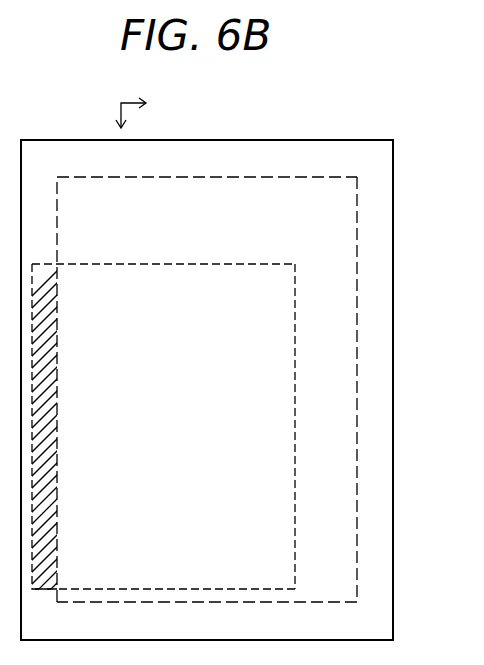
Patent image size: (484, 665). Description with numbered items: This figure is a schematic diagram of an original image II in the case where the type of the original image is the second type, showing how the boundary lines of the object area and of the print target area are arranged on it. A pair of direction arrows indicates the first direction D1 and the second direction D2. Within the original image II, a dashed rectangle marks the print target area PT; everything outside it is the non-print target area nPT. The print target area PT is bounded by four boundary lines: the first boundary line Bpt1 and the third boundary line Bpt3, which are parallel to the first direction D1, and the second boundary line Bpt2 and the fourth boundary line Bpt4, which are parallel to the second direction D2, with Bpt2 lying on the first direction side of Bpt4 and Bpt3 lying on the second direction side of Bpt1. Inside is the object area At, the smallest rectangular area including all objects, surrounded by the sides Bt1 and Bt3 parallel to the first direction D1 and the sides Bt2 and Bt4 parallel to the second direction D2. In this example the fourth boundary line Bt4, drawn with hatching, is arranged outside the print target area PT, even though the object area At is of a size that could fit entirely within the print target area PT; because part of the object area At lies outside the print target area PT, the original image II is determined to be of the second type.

The original image II is at (346, 140).
The non-print target area nPT is at (222, 155).
The print target area PT is at (209, 392).
The first boundary line Bpt1 is at (220, 178).
The second boundary line Bpt2 is at (357, 403).
The third boundary line Bpt3 is at (218, 604).
The fourth boundary line Bpt4 is at (43, 229).
The object area At is at (157, 437).
The first boundary line Bt1 is at (172, 266).
The second boundary line Bt2 is at (294, 400).
The third boundary line Bt3 is at (170, 590).
The fourth boundary line Bt4 is at (43, 592).
The first direction D1 is at (150, 107).
The second direction D2 is at (97, 117).